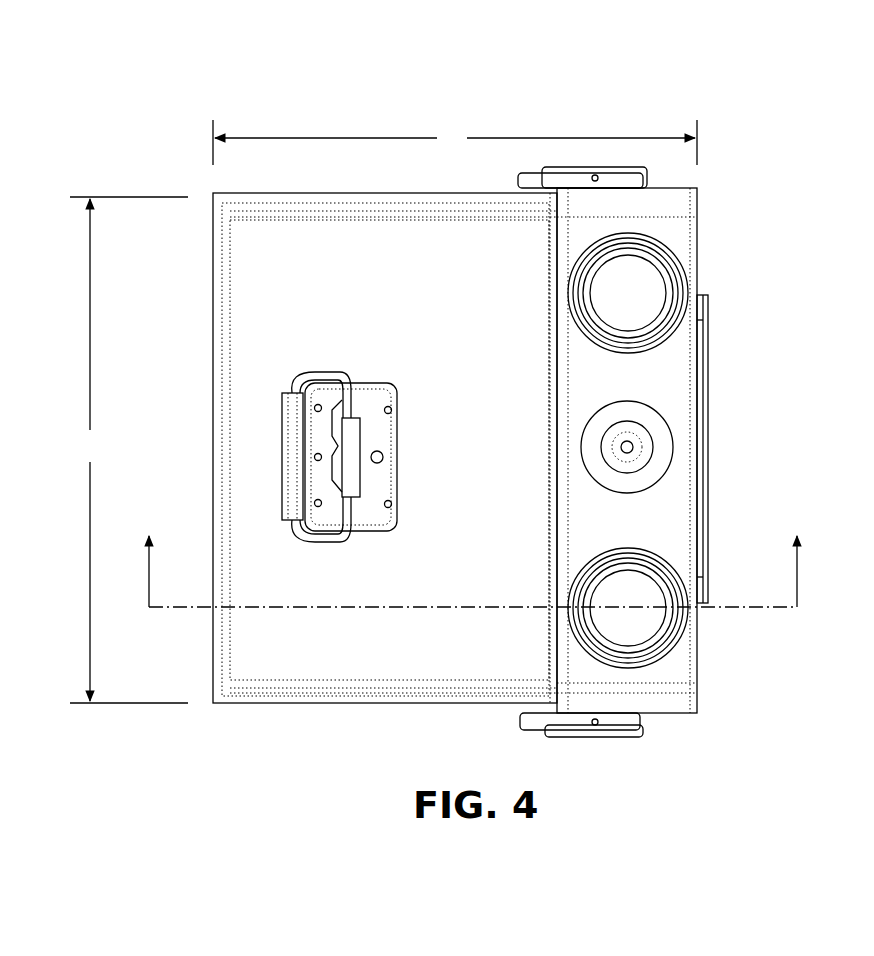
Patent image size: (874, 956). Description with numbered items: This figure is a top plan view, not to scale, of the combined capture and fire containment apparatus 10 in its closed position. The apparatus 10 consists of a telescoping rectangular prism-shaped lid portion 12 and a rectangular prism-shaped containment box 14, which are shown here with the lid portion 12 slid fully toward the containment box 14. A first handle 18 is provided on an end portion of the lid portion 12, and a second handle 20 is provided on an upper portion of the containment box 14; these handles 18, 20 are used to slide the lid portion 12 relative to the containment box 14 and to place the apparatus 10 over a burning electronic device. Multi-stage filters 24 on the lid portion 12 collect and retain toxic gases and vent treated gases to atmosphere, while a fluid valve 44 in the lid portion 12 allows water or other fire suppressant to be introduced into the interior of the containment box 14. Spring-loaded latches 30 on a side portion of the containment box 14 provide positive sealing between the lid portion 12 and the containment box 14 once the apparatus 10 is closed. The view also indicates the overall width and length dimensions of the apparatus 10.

The combined capture and fire containment apparatus 10 is at (742, 146).
The lid portion 12 is at (638, 527).
The containment box 14 is at (454, 465).
The first handle 18 is at (708, 380).
The second handle 20 is at (282, 440).
The multi-stage filters 24 is at (638, 303).
The spring-loaded latches 30 is at (606, 167).
The fluid valve 44 is at (627, 447).